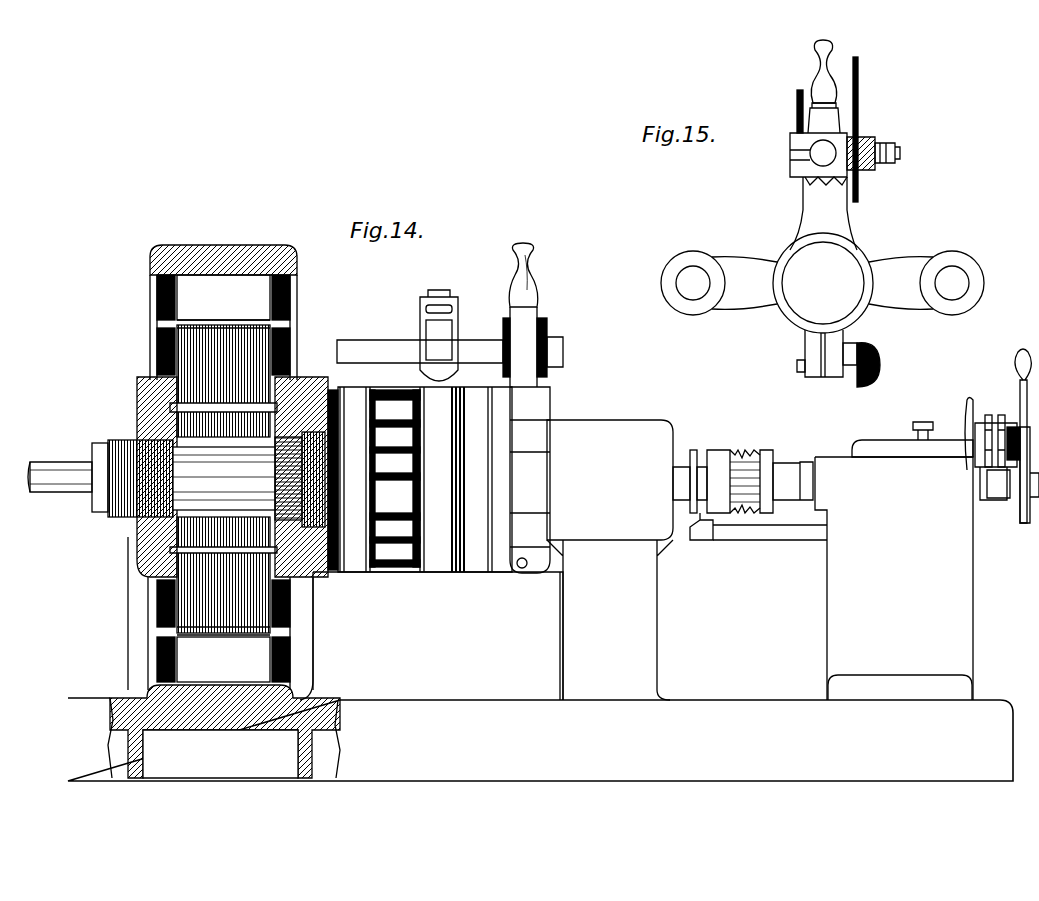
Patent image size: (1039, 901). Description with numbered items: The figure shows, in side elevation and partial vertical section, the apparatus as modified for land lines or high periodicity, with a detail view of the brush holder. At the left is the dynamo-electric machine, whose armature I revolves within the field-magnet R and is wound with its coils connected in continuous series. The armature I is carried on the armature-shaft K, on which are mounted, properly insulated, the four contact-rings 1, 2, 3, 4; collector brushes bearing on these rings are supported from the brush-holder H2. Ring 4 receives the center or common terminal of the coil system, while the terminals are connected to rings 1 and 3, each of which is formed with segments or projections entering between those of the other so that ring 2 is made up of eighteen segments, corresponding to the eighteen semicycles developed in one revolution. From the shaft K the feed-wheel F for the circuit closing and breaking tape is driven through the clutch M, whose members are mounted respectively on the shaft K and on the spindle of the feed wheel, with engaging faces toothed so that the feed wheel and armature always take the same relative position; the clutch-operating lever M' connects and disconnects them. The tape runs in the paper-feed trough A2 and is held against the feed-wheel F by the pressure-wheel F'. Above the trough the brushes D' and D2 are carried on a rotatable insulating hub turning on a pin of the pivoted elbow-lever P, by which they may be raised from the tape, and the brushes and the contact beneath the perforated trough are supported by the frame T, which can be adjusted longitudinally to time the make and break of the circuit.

In FIG. 14, the field-magnet R is at (297, 277).
In FIG. 14, the armature I is at (287, 352).
In FIG. 14, the brush-holder H2 is at (530, 388).
In FIG. 15, the brush-holder H2 is at (840, 215).
In FIG. 14, the contact-ring 1 is at (365, 567).
In FIG. 14, the contact-ring 2 is at (407, 567).
In FIG. 14, the contact-ring 3 is at (448, 567).
In FIG. 14, the contact-ring 4 is at (485, 567).
In FIG. 14, the armature-shaft K is at (680, 463).
In FIG. 14, the clutch M is at (755, 470).
In FIG. 14, the clutch-operating lever M' is at (753, 541).
In FIG. 14, the paper-feed trough A2 is at (973, 500).
In FIG. 14, the pressure-wheel F' is at (916, 443).
In FIG. 14, the feed-wheel F is at (991, 476).
In FIG. 14, the brush D' is at (985, 430).
In FIG. 15, the brush D' is at (869, 129).
In FIG. 14, the brush D2 is at (1001, 415).
In FIG. 14, the elbow-lever P is at (1018, 383).
In FIG. 14, the frame T is at (1027, 523).